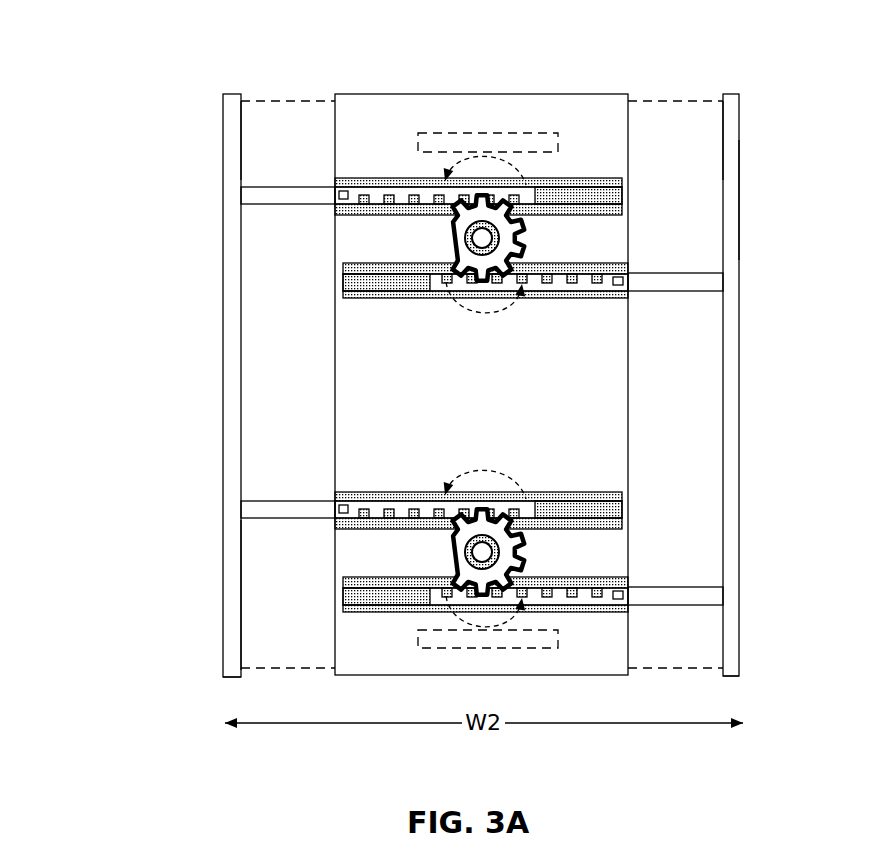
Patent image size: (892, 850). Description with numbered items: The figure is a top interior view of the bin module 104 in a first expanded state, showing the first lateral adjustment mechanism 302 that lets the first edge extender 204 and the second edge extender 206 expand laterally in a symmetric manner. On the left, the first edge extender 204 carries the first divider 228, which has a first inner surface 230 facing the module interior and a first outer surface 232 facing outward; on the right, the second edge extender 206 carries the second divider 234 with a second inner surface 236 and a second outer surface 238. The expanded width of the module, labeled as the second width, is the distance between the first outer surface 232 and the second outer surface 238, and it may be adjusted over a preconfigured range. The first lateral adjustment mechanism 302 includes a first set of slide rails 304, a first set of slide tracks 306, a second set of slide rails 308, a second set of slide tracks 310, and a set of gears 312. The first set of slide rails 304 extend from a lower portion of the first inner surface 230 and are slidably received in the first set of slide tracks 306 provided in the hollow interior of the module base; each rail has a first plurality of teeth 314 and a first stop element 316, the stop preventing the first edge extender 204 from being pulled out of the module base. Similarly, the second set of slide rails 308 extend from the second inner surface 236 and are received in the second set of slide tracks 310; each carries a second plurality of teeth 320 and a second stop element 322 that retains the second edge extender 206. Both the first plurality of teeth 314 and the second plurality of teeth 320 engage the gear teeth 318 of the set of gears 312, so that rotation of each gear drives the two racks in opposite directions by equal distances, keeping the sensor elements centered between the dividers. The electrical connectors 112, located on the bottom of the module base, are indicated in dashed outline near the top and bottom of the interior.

The bin module 104 is at (142, 49).
The electrical connectors 112 is at (455, 133).
The first edge extender 204 is at (232, 677).
The second edge extender 206 is at (731, 676).
The first divider 228 is at (236, 372).
The first inner surface 230 is at (240, 160).
The first outer surface 232 is at (228, 530).
The second divider 234 is at (741, 410).
The second inner surface 236 is at (722, 160).
The second outer surface 238 is at (741, 198).
The first lateral adjustment mechanism 302 is at (420, 365).
The first set of slide rails 304 is at (276, 205).
The first set of slide tracks 306 is at (600, 178).
The second set of slide rails 308 is at (668, 300).
The second set of slide tracks 310 is at (358, 298).
The set of gears 312 is at (522, 233).
The first plurality of teeth 314 is at (385, 197).
The first stop element 316 is at (344, 191).
The gear teeth 318 is at (446, 230).
The second plurality of teeth 320 is at (550, 293).
The second stop element 322 is at (616, 290).